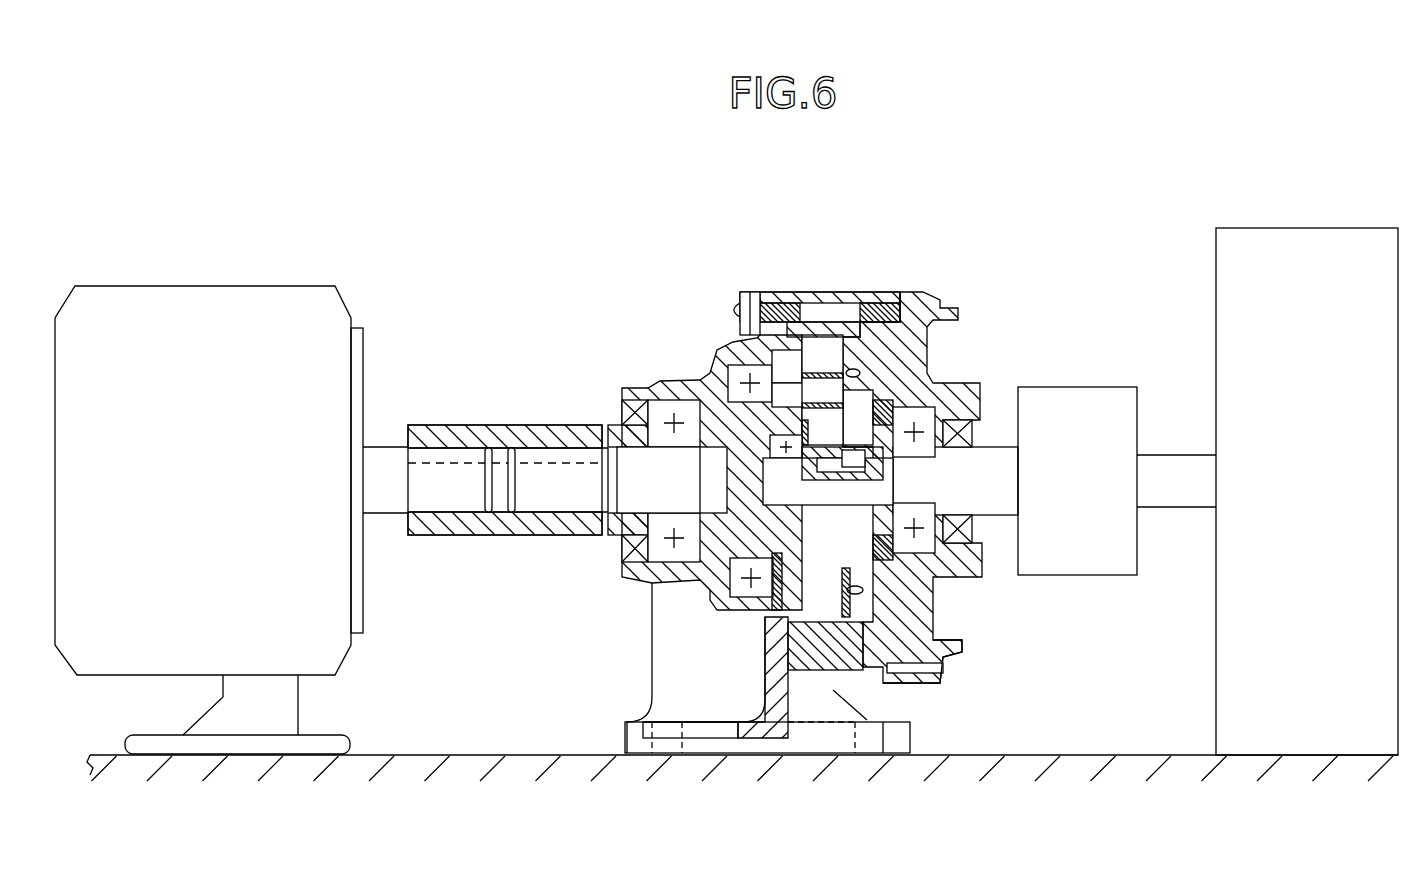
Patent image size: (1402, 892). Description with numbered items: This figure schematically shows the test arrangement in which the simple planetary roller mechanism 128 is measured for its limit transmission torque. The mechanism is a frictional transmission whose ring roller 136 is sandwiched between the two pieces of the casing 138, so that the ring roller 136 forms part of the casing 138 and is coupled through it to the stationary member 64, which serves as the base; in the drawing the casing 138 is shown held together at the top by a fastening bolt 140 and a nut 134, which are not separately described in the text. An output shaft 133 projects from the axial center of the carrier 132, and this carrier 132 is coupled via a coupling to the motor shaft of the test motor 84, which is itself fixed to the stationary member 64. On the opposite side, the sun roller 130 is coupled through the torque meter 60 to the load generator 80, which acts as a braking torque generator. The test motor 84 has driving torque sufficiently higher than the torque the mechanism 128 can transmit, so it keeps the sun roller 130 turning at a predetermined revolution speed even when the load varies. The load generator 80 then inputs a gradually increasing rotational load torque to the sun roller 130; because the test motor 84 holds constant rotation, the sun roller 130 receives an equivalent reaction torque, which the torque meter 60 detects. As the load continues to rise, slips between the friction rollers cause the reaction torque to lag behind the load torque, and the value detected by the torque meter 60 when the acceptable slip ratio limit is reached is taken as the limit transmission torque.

The torque meter 60 is at (1068, 387).
The stationary member 64 is at (1052, 812).
The load generator 80 is at (1297, 494).
The test motor 84 is at (273, 285).
The simple planetary roller mechanism 128 is at (828, 600).
The sun roller 130 is at (810, 507).
The carrier 132 is at (733, 430).
The output shaft 133 is at (545, 500).
The nut 134 is at (830, 350).
The ring roller 136 is at (823, 298).
The casing 138 is at (950, 660).
The bolt 140 is at (730, 312).